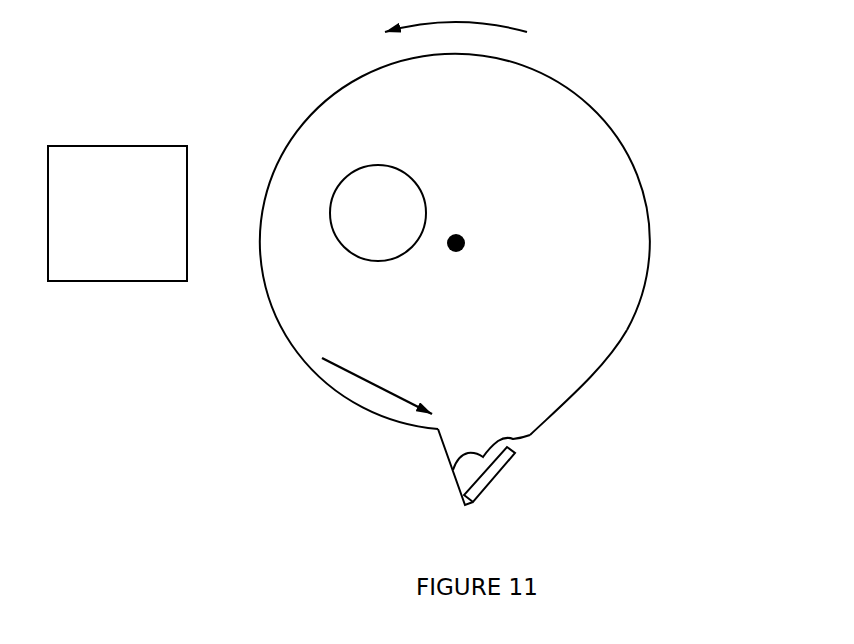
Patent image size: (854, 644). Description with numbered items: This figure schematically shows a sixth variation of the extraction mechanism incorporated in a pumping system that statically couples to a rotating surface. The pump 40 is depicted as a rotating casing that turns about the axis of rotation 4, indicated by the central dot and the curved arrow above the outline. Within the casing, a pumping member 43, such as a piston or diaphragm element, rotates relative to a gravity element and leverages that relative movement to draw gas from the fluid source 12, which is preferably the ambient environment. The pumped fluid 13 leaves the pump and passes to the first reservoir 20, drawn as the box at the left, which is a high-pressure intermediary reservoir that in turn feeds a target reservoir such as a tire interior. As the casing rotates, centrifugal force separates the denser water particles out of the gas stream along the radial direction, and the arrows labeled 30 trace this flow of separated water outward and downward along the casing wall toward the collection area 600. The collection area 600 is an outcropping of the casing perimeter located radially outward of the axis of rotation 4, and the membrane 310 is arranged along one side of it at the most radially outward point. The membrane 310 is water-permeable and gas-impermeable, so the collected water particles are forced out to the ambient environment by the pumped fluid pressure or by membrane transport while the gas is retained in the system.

The pump 40 is at (353, 80).
The pumping member 43 is at (346, 180).
The fluid source 12 is at (378, 165).
The axis of rotation 4 is at (466, 242).
The pumped fluid 13 is at (330, 212).
The first reservoir 20 is at (104, 226).
The material flow 30 is at (307, 212).
The collection area 600 is at (447, 473).
The membrane 310 is at (503, 483).